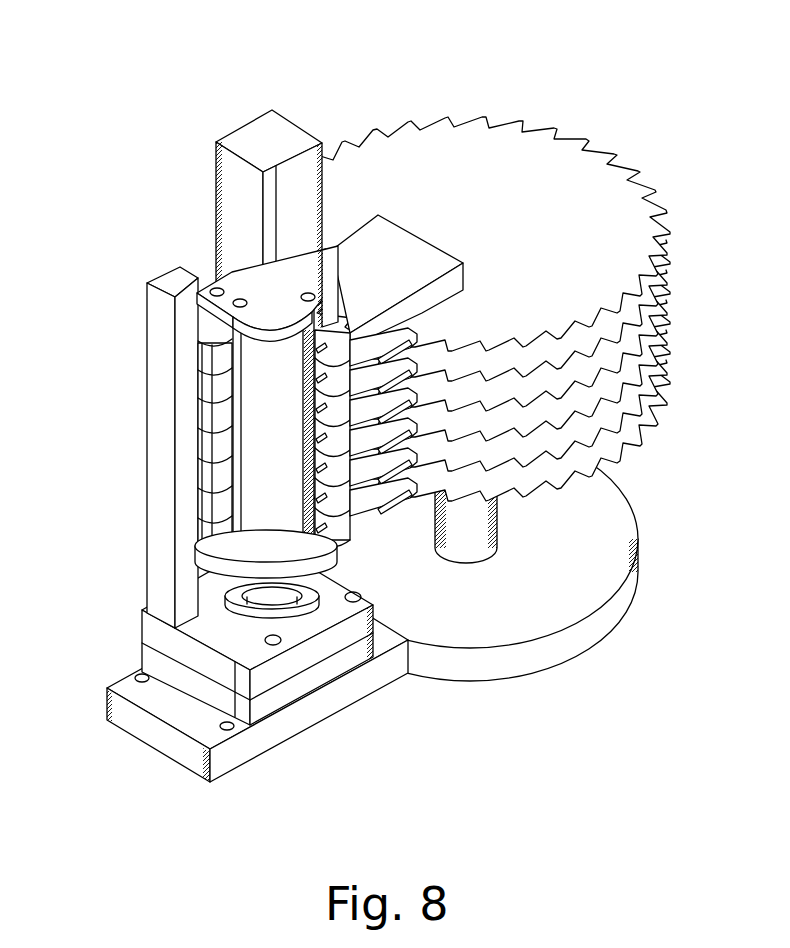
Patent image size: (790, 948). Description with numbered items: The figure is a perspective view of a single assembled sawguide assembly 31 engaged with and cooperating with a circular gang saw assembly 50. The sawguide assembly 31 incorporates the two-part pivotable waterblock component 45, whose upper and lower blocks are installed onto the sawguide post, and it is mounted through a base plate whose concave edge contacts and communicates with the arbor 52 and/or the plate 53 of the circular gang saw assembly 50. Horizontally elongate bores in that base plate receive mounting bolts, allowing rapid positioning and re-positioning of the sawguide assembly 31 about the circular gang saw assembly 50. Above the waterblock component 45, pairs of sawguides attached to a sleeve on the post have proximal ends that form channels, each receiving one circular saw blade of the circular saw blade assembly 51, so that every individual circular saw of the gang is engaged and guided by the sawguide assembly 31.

The circular gang saw assembly 50 is at (604, 58).
The sawguide assembly 31 is at (78, 109).
The pivotable waterblock component 45 is at (136, 606).
The circular saw blade assembly 51 is at (688, 151).
The arbor 52 is at (498, 523).
The plate 53 is at (570, 655).